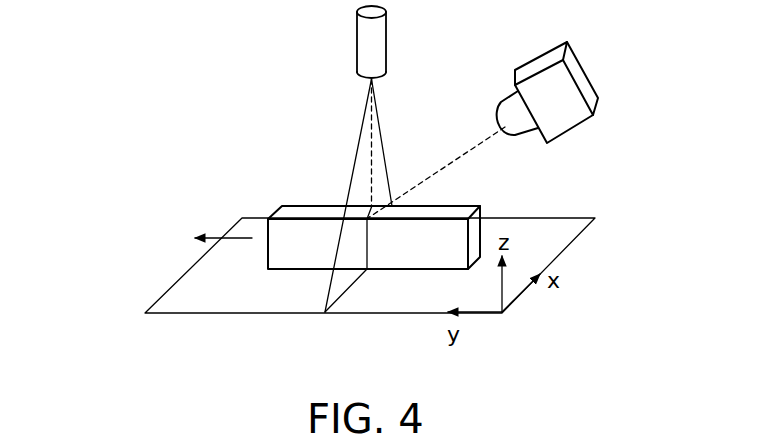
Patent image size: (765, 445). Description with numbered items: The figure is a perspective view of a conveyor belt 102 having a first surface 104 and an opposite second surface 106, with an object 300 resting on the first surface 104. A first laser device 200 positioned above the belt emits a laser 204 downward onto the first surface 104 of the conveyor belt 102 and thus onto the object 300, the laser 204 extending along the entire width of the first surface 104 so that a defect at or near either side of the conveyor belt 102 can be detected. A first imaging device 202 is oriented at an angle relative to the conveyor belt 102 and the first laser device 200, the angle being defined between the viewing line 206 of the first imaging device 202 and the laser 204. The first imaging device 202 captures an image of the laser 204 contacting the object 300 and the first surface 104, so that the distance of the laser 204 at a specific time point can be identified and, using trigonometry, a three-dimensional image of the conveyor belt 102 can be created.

The conveyor belt 102 is at (125, 339).
The first surface 104 is at (170, 302).
The second surface 106 is at (213, 313).
The first laser device 200 is at (386, 40).
The first imaging device 202 is at (590, 70).
The laser 204 is at (373, 128).
The viewing line 206 is at (482, 135).
The object 300 is at (302, 198).